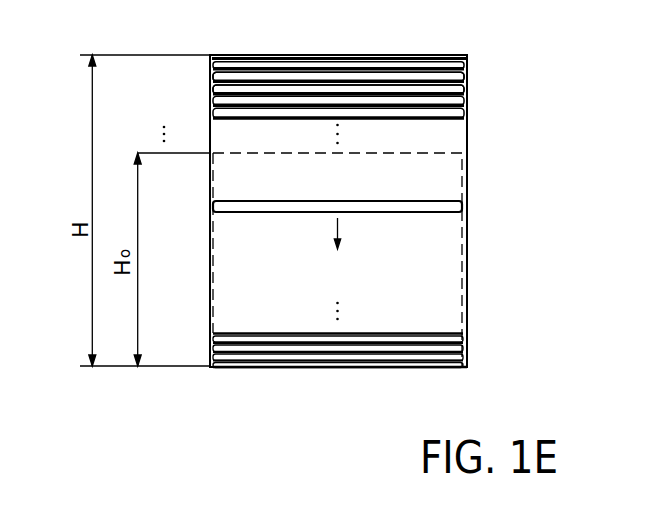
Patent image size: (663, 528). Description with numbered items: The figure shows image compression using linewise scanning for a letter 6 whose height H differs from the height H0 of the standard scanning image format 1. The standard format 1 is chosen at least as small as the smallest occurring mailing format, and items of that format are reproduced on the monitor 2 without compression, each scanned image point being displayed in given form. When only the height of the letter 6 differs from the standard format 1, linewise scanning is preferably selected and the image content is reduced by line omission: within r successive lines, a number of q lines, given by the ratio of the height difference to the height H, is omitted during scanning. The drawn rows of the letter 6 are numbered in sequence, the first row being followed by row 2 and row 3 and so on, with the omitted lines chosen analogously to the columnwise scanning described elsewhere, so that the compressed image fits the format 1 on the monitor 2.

The scanning image format 1 is at (212, 64).
The monitor 2 is at (212, 76).
The third slot 3 is at (212, 89).
The letter 6 is at (452, 138).